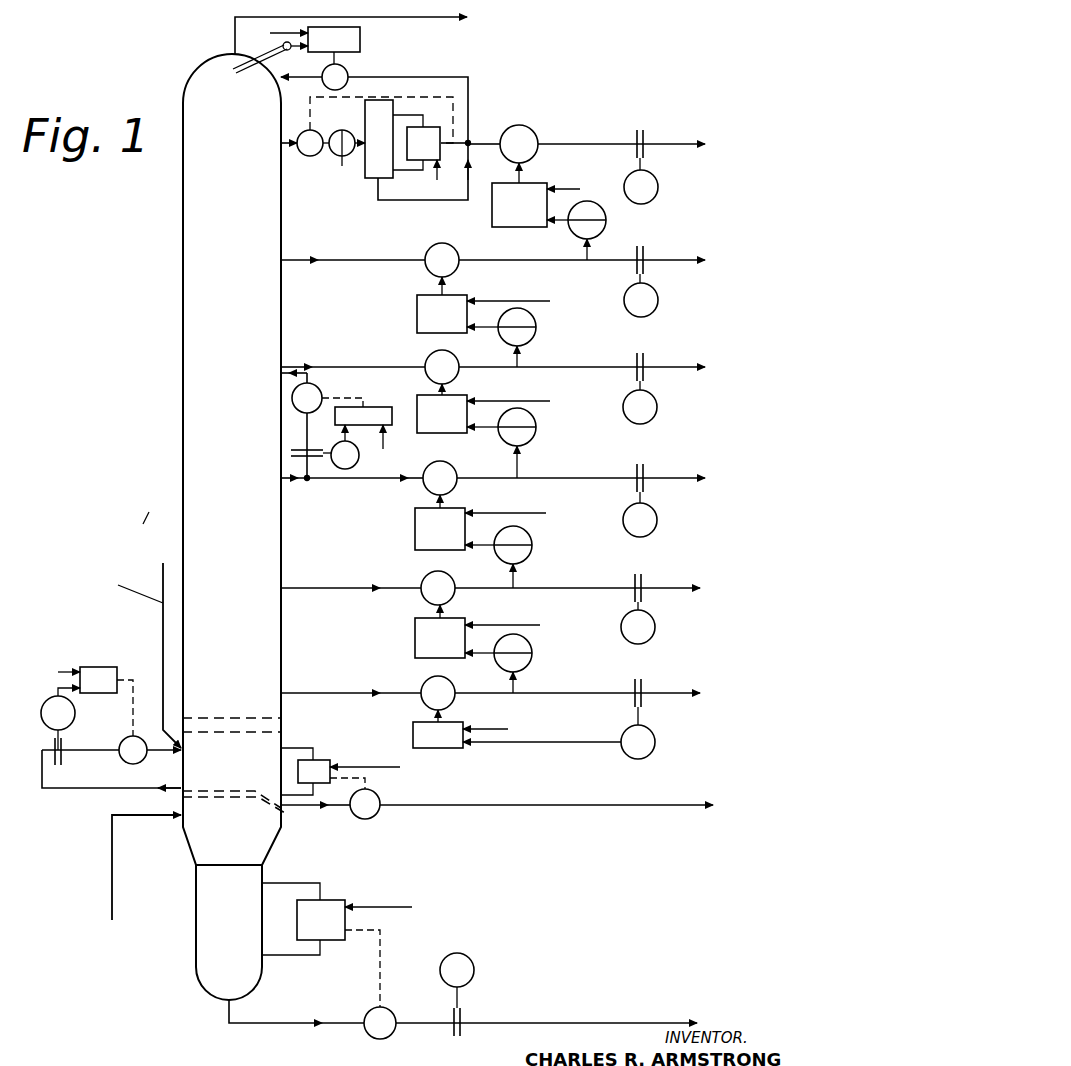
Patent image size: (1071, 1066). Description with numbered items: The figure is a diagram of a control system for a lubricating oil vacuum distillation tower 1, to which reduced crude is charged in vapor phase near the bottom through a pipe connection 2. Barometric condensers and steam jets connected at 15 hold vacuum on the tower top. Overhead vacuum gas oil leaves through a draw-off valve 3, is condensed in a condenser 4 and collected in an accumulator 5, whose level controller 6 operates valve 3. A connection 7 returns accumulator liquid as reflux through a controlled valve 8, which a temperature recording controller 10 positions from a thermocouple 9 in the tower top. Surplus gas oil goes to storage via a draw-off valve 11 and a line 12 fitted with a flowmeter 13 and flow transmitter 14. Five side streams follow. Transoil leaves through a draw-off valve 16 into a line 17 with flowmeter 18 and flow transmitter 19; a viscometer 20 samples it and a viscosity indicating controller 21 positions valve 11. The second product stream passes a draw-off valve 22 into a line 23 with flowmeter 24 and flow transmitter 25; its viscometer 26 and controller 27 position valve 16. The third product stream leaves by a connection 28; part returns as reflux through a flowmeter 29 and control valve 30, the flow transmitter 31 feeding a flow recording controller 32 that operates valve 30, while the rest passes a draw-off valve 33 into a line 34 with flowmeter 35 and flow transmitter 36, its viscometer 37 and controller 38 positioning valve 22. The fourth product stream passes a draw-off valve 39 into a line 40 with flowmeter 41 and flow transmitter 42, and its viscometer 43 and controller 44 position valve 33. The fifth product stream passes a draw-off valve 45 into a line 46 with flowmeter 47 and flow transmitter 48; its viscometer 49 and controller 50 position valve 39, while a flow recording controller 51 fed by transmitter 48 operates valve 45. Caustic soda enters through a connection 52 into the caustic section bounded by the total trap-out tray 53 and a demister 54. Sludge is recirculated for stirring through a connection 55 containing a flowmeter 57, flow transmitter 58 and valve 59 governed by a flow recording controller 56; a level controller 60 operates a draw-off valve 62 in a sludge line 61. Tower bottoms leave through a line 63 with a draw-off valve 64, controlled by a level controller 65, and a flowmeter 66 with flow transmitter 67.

The vacuum distillation tower 1 is at (190, 230).
The pipe connection 2 is at (110, 878).
The draw-off valve 3 is at (304, 153).
The condenser 4 is at (338, 152).
The accumulator 5 is at (366, 176).
The level controller 6 is at (441, 140).
The connection 7 is at (468, 95).
The controlled valve 8 is at (348, 70).
The temperature-sensing element 9 is at (232, 70).
The temperature recording controller 10 is at (361, 35).
The draw-off valve 11 is at (526, 127).
The line 12 is at (590, 136).
The flowmeter 13 is at (643, 130).
The flow transmitter 14 is at (658, 186).
The connection to jets 15 is at (235, 30).
The draw-off valve 16 is at (432, 250).
The line 17 is at (550, 261).
The flowmeter 18 is at (645, 257).
The flow transmitter 19 is at (658, 299).
The viscometer 20 is at (606, 225).
The viscosity indicating controller 21 is at (525, 230).
The draw-off valve 22 is at (430, 358).
The line 23 is at (565, 367).
The flowmeter 24 is at (645, 364).
The flow transmitter 25 is at (657, 408).
The viscometer 26 is at (536, 332).
The viscosity indicating controller 27 is at (417, 311).
The connection 28 is at (307, 482).
The flowmeter 29 is at (300, 451).
The control valve 30 is at (318, 387).
The flow transmitter 31 is at (340, 469).
The flow recording controller 32 is at (371, 407).
The draw-off valve 33 is at (447, 466).
The line 34 is at (560, 478).
The flowmeter 35 is at (645, 474).
The flow transmitter 36 is at (657, 521).
The viscometer 37 is at (536, 431).
The viscosity indicating controller 38 is at (460, 396).
The draw-off valve 39 is at (425, 579).
The line 40 is at (565, 588).
The flowmeter 41 is at (643, 585).
The flow transmitter 42 is at (655, 630).
The viscometer 43 is at (532, 551).
The viscosity indicating controller 44 is at (415, 527).
The draw-off valve 45 is at (425, 686).
The line 46 is at (570, 693).
The flowmeter 47 is at (645, 690).
The flow transmitter 48 is at (655, 746).
The viscometer 49 is at (532, 660).
The viscosity indicating controller 50 is at (415, 641).
The flow recording controller 51 is at (412, 738).
The connection 52 is at (163, 635).
The total trap-out tray 53 is at (245, 778).
The demister 54 is at (218, 716).
The connection 55 is at (82, 790).
The flow recording controller 56 is at (101, 668).
The flowmeter 57 is at (64, 762).
The flow transmitter 58 is at (44, 719).
The controllable valve 59 is at (122, 741).
The level controller 60 is at (315, 759).
The line 61 is at (294, 808).
The draw-off valve 62 is at (375, 815).
The line 63 is at (268, 1025).
The draw-off valve 64 is at (370, 1035).
The level controller 65 is at (325, 899).
The flowmeter 66 is at (450, 1036).
The flow transmitter 67 is at (470, 960).